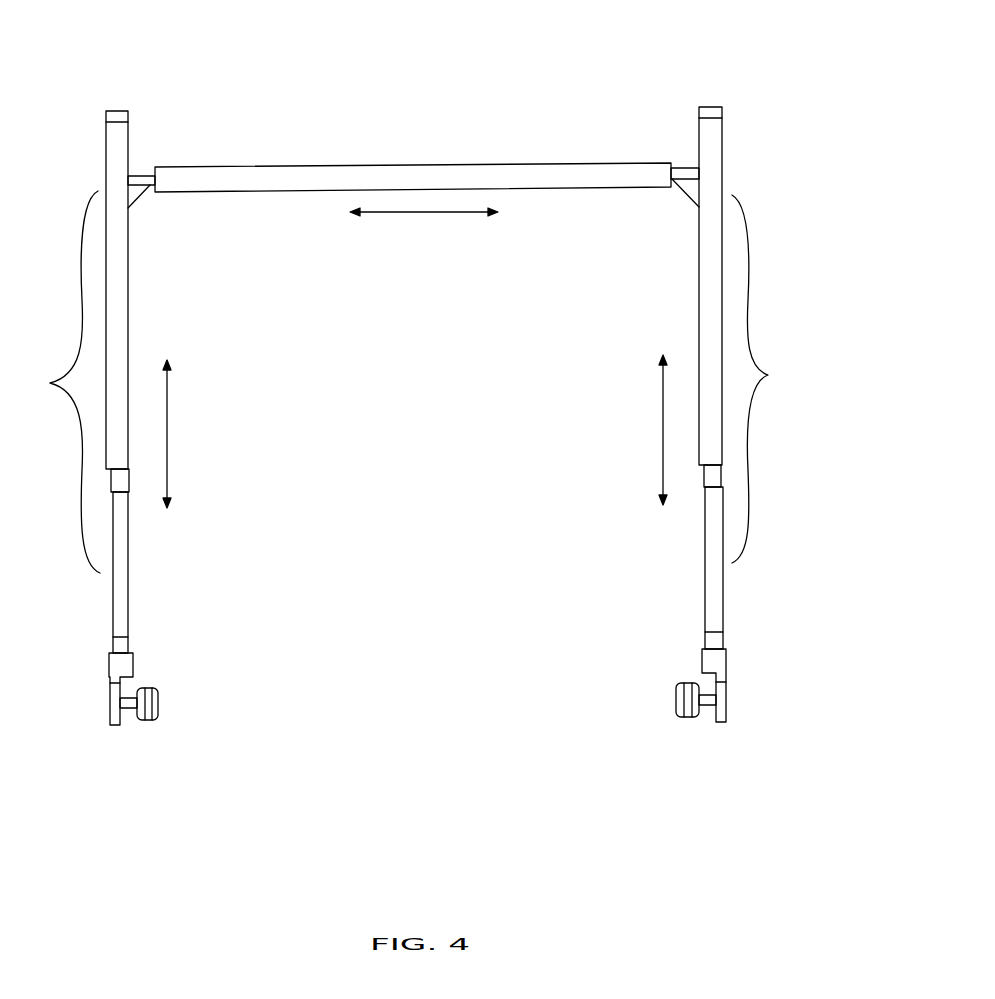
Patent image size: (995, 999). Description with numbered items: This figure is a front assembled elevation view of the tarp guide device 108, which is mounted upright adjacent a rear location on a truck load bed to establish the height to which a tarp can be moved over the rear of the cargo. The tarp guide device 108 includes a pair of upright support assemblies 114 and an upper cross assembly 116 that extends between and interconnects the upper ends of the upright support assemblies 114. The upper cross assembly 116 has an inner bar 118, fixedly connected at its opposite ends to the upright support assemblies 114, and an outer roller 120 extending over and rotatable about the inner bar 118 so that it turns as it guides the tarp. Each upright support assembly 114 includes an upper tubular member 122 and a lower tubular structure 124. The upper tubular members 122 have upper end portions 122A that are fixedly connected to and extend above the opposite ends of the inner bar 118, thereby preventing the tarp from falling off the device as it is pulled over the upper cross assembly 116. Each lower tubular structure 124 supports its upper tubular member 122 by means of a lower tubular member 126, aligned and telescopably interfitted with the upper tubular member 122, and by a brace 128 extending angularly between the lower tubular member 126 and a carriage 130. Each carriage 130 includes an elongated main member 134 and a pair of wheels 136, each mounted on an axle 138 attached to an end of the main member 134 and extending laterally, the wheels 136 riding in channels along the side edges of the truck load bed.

The tarp guide device 108 is at (616, 60).
The upright support assemblies 114 is at (50, 383).
The upper cross assembly 116 is at (261, 135).
The inner bar 118 is at (142, 160).
The outer roller 120 is at (352, 165).
The upper tubular member 122 is at (128, 279).
The upper end portion 122A is at (105, 142).
The lower tubular structure 124 is at (154, 582).
The lower tubular member 126 is at (129, 480).
The brace 128 is at (128, 525).
The carriage 130 is at (155, 669).
The elongated main member 134 is at (109, 702).
The wheel 136 is at (158, 705).
The axle 138 is at (128, 713).